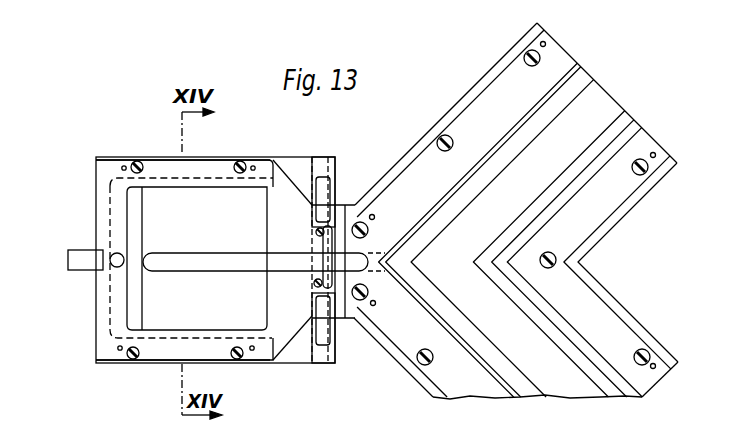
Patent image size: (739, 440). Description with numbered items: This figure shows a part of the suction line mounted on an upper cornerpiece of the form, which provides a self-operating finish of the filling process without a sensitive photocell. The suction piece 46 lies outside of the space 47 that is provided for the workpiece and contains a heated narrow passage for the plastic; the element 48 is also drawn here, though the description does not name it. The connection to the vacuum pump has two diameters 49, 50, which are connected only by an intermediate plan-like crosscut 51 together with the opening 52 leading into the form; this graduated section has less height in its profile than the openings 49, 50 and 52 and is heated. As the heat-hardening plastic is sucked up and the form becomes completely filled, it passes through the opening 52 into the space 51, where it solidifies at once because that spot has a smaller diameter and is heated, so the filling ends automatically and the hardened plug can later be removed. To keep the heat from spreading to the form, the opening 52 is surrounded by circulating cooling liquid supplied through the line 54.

The suction piece 46 is at (472, 113).
The space provided for the workpiece 47 is at (575, 133).
The rod 48 is at (82, 258).
The diameter of the connection to the vacuum pump 49 is at (152, 335).
The diameter of the connection to the vacuum pump 50 is at (158, 187).
The intermediate plan-like crosscut 51 is at (237, 217).
The opening leading into the form 52 is at (290, 262).
The cooling liquid line 54 is at (322, 185).